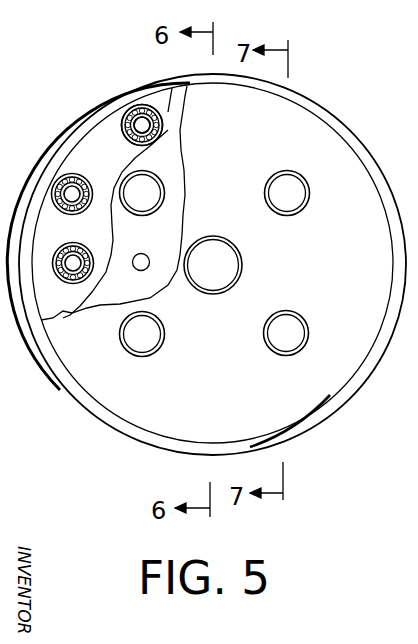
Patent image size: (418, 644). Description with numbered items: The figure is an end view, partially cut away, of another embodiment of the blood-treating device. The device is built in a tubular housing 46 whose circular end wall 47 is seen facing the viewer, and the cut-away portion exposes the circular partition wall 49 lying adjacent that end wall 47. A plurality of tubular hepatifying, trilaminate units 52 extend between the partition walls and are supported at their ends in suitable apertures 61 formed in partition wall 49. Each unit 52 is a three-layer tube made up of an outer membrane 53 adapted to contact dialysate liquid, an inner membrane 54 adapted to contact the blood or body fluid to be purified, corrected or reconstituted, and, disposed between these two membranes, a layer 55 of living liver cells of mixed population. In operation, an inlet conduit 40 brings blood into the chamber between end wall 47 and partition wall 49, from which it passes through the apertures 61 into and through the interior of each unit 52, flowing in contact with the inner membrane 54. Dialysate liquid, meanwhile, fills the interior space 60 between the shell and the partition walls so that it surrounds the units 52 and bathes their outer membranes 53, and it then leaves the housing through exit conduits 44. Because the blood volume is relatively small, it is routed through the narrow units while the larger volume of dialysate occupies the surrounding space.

The inlet conduit 40 is at (240, 258).
The exit conduits 44 is at (265, 193).
The tubular housing 46 is at (335, 422).
The end wall 47 is at (236, 398).
The circular partition wall 49 is at (160, 243).
The tubular hepatifying trilaminate unit 52 is at (132, 119).
The outer membrane 53 is at (142, 106).
The inner membrane 54 is at (137, 141).
The layer of living liver cells 55 is at (122, 118).
The interior space 60 is at (88, 243).
The apertures 61 is at (143, 270).